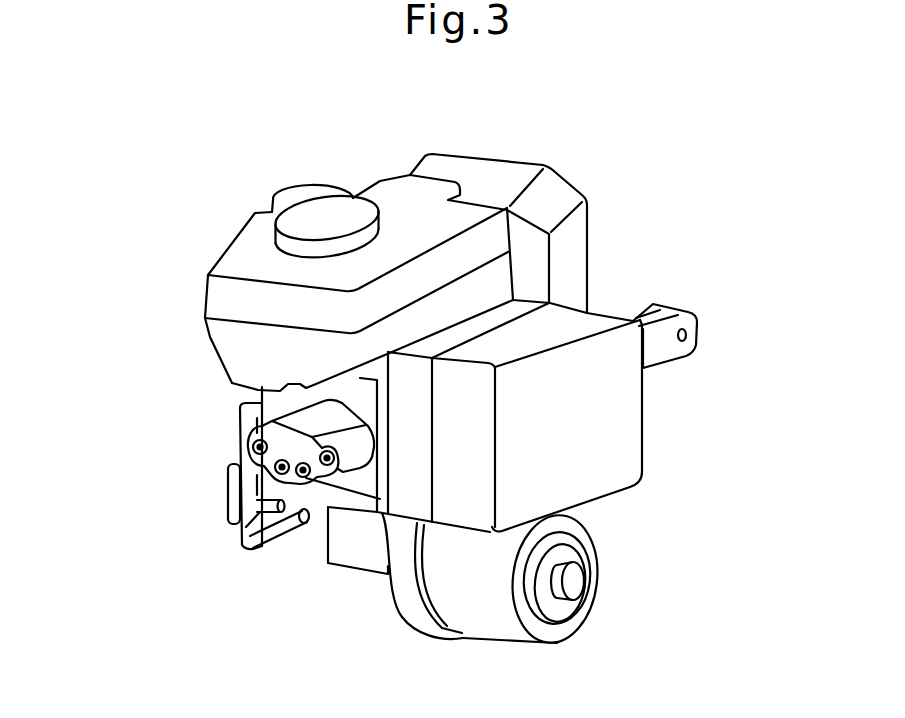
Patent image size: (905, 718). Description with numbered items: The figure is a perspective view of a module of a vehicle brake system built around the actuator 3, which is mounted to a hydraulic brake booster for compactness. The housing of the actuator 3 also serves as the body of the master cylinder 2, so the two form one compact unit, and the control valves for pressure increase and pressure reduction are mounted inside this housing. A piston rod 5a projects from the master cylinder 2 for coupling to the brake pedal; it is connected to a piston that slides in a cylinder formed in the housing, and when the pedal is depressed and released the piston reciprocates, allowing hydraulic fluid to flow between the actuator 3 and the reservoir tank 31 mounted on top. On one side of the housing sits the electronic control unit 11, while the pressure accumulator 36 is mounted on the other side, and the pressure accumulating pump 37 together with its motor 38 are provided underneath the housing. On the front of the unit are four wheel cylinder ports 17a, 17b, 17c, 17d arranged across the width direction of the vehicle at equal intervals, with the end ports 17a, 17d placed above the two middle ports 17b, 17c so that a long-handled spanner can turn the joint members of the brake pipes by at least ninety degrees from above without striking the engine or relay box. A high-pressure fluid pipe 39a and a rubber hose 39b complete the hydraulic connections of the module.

The master cylinder 2 is at (328, 388).
The actuator 3 is at (518, 317).
The piston rod 5a is at (665, 338).
The electronic control unit 11 is at (593, 453).
The wheel cylinder port 17a is at (253, 448).
The wheel cylinder port 17b is at (240, 514).
The wheel cylinder port 17c is at (278, 481).
The wheel cylinder port 17d is at (328, 466).
The reservoir tank 31 is at (397, 198).
The pressure accumulator 36 is at (302, 197).
The pressure accumulating pump 37 is at (360, 565).
The motor 38 is at (490, 610).
The high-pressure fluid pipe 39a is at (233, 495).
The rubber hose 39b is at (266, 546).